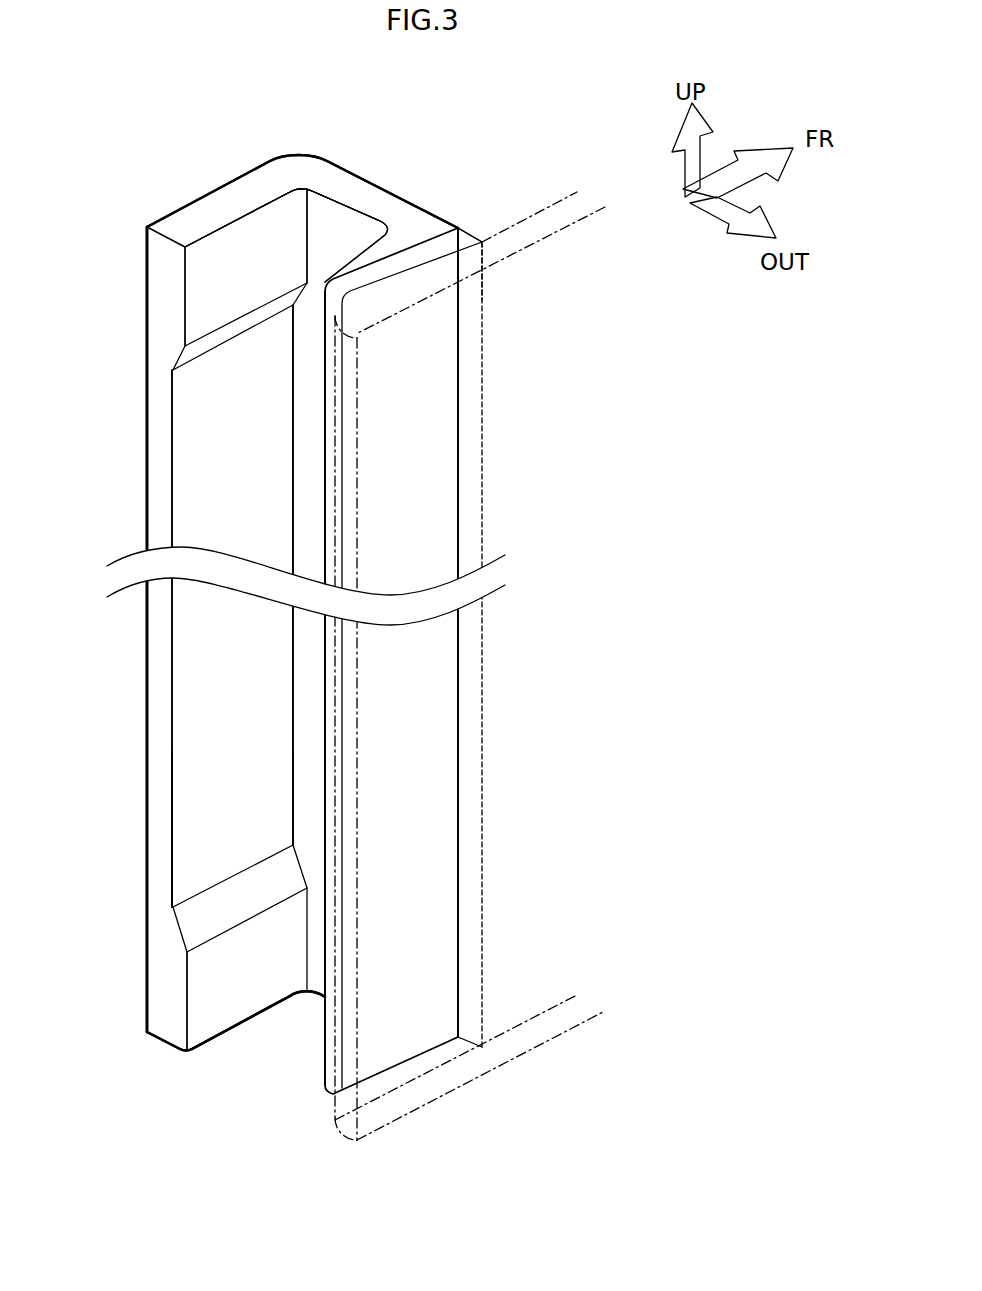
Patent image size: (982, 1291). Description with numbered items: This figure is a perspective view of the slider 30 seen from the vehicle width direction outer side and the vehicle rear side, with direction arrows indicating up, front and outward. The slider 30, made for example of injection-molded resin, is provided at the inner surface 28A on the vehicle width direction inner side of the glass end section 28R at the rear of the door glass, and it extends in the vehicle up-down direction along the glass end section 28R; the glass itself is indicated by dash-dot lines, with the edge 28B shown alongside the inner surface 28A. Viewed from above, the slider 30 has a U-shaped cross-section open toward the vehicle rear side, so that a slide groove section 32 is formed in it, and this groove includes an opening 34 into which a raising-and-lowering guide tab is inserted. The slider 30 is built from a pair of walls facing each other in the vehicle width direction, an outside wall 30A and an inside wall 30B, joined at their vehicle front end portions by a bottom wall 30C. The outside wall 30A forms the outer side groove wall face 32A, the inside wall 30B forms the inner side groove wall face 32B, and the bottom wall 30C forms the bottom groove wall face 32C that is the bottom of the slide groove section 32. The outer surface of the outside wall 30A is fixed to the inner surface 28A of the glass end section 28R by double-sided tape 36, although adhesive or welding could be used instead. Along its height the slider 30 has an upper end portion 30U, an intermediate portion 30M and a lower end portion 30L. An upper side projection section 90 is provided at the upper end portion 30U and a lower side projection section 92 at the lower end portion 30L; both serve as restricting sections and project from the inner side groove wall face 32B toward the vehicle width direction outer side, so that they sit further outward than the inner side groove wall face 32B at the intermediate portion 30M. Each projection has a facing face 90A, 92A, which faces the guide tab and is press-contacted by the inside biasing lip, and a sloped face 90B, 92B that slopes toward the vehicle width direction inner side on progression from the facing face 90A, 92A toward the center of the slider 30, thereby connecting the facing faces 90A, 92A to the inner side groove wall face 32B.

The inner surface 28A is at (511, 224).
The lower edge of side member 28B is at (538, 242).
The glass end section 28R is at (432, 300).
The slider 30 is at (377, 178).
The outside wall 30A is at (423, 495).
The inside wall 30B is at (146, 486).
The bottom wall 30C is at (393, 203).
The upper end portion 30U is at (147, 283).
The intermediate portion 30M is at (146, 630).
The lower end portion 30L is at (146, 987).
The slide groove section 32 is at (220, 653).
The outer side groove wall face 32A is at (312, 712).
The inner side groove wall face 32B is at (203, 708).
The bottom groove wall face 32C is at (332, 225).
The opening 34 is at (210, 808).
The double-sided tape 36 is at (476, 240).
The upper side projection section 90 is at (165, 307).
The facing face 90A is at (233, 253).
The sloped face 90B is at (222, 340).
The lower side projection section 92 is at (170, 1017).
The facing face 92A is at (240, 1000).
The sloped face 92B is at (205, 912).